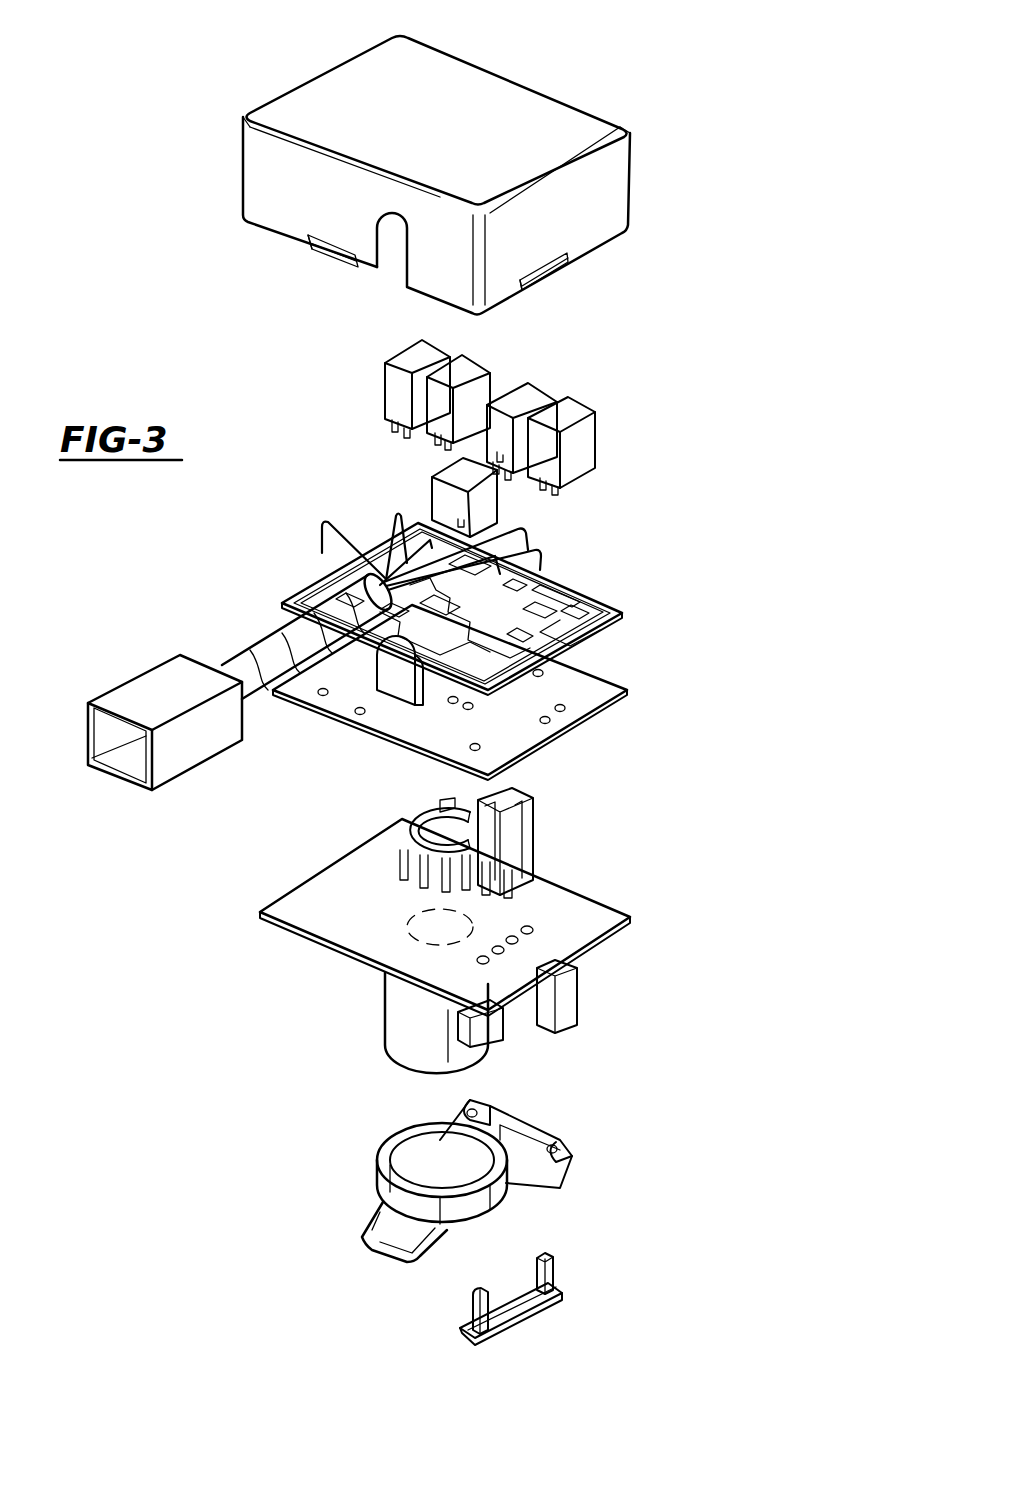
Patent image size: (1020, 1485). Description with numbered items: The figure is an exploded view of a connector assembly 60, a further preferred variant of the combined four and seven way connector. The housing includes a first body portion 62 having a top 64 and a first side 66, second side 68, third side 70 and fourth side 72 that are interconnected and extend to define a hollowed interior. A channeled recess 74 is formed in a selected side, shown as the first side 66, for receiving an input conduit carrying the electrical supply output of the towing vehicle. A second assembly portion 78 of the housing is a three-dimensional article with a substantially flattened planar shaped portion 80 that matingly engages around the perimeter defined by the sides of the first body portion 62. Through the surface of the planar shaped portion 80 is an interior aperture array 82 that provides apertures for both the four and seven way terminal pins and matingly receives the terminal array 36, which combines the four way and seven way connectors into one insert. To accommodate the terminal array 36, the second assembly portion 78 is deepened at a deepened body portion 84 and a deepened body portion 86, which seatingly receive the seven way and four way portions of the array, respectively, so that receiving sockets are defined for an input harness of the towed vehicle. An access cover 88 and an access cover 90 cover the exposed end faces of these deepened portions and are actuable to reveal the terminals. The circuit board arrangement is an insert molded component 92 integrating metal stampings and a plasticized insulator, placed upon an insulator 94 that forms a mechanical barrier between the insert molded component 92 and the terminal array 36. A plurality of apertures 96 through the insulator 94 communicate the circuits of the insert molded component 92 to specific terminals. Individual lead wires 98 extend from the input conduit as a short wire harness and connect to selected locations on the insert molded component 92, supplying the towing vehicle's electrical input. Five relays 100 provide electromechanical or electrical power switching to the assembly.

The terminal array 36 is at (540, 833).
The connector assembly 60 is at (643, 462).
The first body portion 62 is at (224, 163).
The top 64 is at (317, 85).
The first side 66 is at (275, 222).
The second side 68 is at (618, 200).
The third side 70 is at (252, 110).
The fourth side 72 is at (590, 108).
The channeled recess 74 is at (395, 262).
The second assembly portion 78 is at (358, 969).
The planar shaped portion 80 is at (297, 893).
The interior aperture array 82 is at (483, 920).
The deepened body portion 84 is at (388, 1045).
The deepened body portion 86 is at (520, 1010).
The access cover 88 is at (373, 1200).
The access cover 90 is at (575, 1292).
The insert molded component 92 is at (580, 598).
The insulator 94 is at (612, 680).
The apertures 96 is at (550, 721).
The lead wires 98 is at (400, 522).
The relays 100 is at (520, 392).